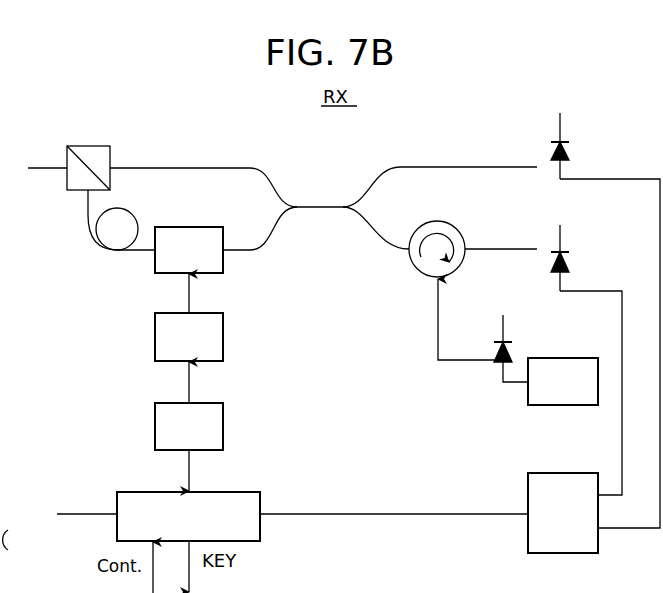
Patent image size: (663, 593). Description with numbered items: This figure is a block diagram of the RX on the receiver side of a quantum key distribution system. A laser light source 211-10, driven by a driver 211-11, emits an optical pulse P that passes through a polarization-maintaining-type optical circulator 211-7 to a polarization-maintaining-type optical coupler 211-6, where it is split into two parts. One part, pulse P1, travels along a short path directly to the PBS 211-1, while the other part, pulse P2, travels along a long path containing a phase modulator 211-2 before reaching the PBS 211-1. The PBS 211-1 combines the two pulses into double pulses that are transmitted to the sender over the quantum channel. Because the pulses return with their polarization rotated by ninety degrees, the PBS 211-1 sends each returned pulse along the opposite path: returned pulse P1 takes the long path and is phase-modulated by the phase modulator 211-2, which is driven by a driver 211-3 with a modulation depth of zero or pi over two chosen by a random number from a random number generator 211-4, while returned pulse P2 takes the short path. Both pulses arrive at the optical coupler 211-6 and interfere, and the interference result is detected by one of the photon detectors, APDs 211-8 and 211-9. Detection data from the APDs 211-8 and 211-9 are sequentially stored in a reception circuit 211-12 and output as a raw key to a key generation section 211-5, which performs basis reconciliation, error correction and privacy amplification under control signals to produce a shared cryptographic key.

The PBS 211-1 is at (110, 152).
The phase modulator 211-2 is at (223, 262).
The driver 211-3 is at (223, 337).
The random number generator 211-4 is at (223, 426).
The key generation section 211-5 is at (260, 497).
The polarization-maintaining-type optical coupler 211-6 is at (318, 205).
The polarization-maintaining-type optical circulator 211-7 is at (468, 205).
The APD 211-8 is at (564, 148).
The APD 211-9 is at (564, 258).
The laser light source 211-10 is at (499, 338).
The driver 211-11 is at (528, 400).
The reception circuit 211-12 is at (528, 532).